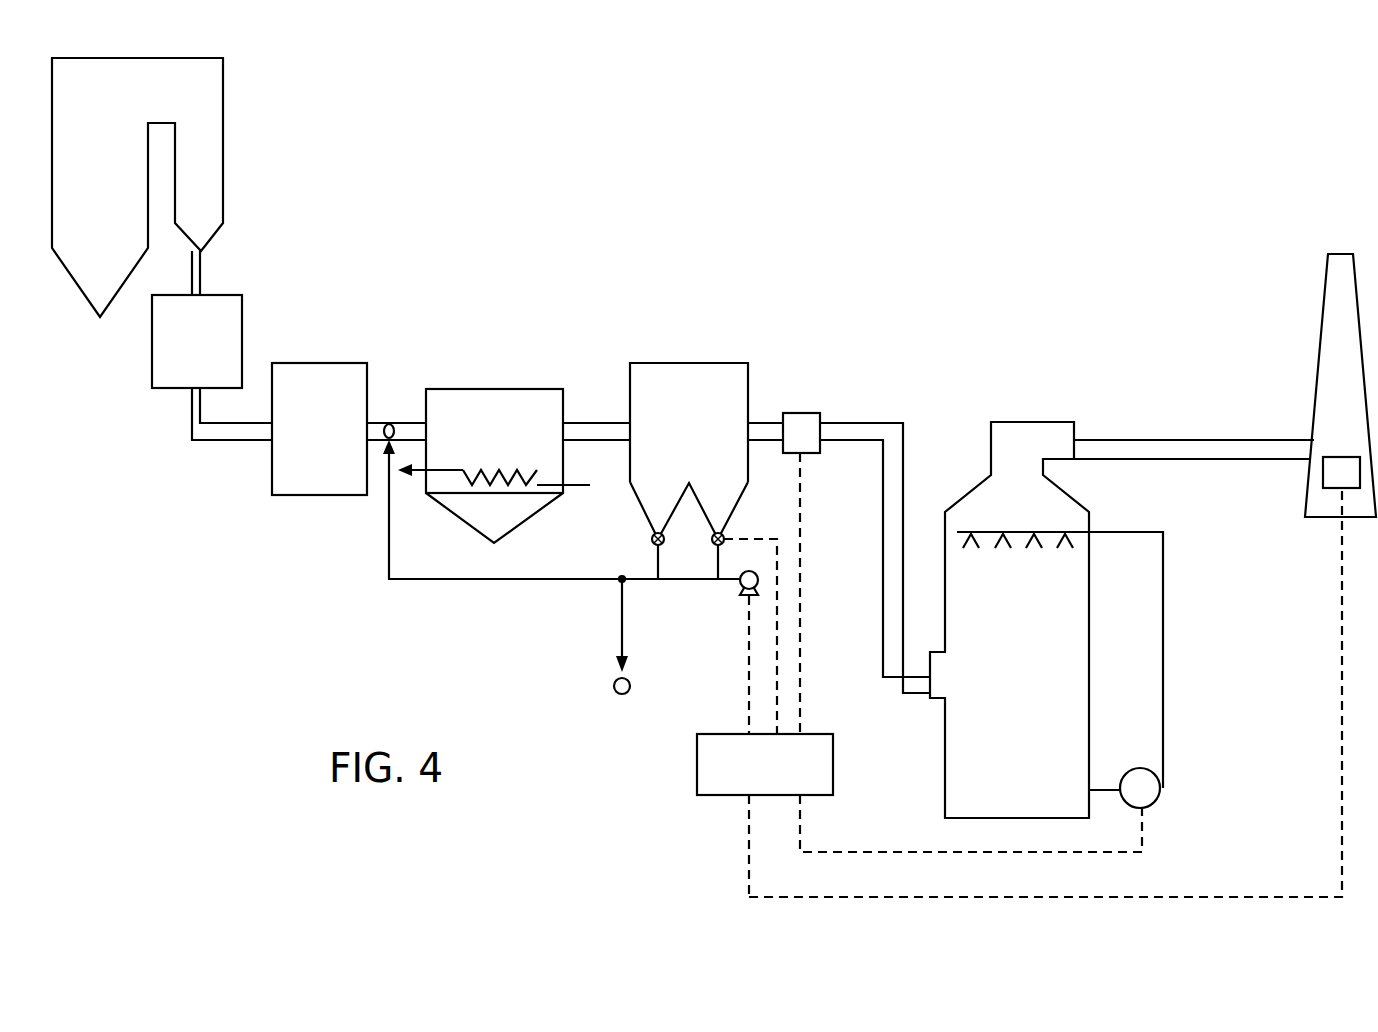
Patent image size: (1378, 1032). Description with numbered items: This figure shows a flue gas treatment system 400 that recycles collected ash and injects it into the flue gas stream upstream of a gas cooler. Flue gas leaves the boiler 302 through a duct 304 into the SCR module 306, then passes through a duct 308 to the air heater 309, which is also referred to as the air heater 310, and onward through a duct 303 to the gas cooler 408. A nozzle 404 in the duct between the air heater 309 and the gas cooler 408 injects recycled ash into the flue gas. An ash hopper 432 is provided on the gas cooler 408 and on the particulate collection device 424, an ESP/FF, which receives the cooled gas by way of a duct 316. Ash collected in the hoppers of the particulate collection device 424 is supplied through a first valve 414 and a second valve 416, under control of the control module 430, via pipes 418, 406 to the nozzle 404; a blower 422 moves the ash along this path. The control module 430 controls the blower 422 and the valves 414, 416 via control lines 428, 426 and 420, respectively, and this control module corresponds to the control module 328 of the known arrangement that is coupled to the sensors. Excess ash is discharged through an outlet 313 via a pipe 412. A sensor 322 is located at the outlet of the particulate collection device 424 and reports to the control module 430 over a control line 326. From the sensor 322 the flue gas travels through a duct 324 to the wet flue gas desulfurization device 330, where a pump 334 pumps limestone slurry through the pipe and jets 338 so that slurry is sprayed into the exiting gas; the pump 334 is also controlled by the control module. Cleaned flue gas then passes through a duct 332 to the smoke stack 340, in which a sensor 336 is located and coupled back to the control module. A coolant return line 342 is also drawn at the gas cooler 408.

The system 400 is at (790, 165).
The boiler 302 is at (223, 162).
The duct 304 is at (202, 272).
The SCR module 306 is at (243, 327).
The duct 308 is at (192, 442).
The air heater 309 is at (330, 363).
The duct 303 is at (410, 423).
The nozzle 404 is at (389, 423).
The gas cooler 408 is at (497, 389).
The ash hopper 432 is at (525, 523).
The duct 316 is at (610, 441).
The air heater 310 is at (590, 487).
The coolant return line 342 is at (421, 478).
The pipe 406 is at (388, 528).
The particulate collection device 424 is at (688, 363).
The valve 414 is at (651, 540).
The valve 416 is at (724, 537).
The control line 420 is at (690, 541).
The pipe 418 is at (672, 582).
The pipe 412 is at (620, 645).
The outlet 313 is at (613, 687).
The blower 422 is at (745, 597).
The sensor 322 is at (797, 413).
The duct 324 is at (870, 423).
The wet flue gas desulfurization device 330 is at (1030, 422).
The duct 332 is at (1140, 440).
The pump 334 is at (1165, 594).
The pipe and jets 338 is at (973, 546).
The control module 328 is at (932, 700).
The control line 426 is at (777, 552).
The control line 326 is at (802, 545).
The control line 428 is at (748, 678).
The control module 430 is at (833, 767).
The smoke stack 340 is at (1325, 285).
The sensor 336 is at (1322, 471).